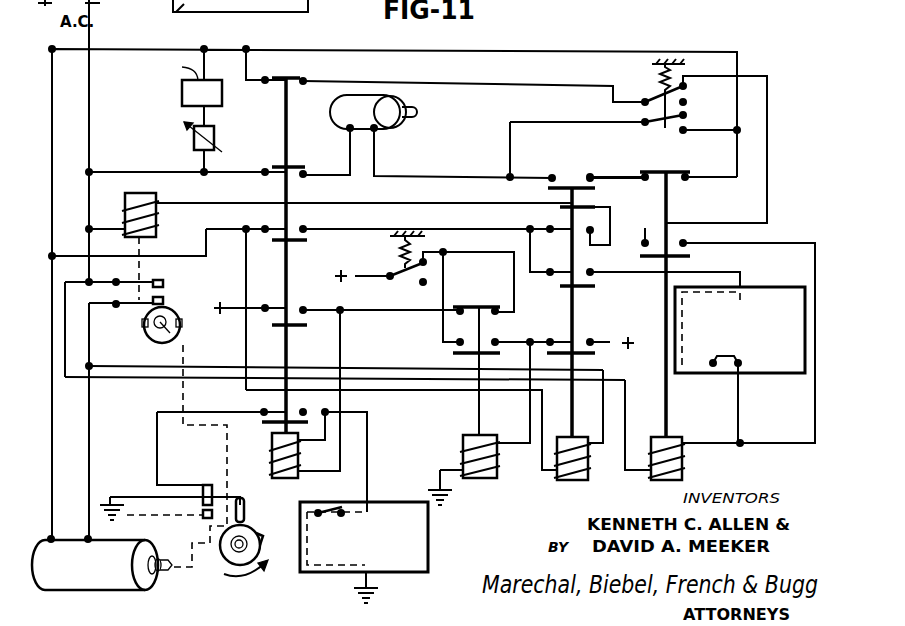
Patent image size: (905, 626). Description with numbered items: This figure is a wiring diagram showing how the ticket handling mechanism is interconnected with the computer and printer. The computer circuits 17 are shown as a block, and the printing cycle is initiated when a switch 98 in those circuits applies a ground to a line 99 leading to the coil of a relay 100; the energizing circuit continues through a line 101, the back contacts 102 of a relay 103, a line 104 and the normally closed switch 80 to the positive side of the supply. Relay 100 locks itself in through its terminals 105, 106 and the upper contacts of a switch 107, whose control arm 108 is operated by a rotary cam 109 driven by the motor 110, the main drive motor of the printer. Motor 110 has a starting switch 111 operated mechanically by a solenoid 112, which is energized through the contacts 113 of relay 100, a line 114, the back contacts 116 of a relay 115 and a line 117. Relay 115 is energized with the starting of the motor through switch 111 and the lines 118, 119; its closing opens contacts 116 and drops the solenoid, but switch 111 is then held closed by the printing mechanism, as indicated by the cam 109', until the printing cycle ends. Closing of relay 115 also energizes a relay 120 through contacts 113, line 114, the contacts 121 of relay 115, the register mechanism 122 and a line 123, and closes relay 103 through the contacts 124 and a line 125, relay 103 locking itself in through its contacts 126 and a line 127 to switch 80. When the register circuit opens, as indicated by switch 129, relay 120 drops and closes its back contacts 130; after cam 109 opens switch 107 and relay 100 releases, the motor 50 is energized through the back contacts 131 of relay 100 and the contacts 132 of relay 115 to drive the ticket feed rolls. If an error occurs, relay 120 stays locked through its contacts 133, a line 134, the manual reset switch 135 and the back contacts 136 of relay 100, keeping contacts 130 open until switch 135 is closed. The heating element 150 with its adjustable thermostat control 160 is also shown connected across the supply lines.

The computer circuits 17 is at (313, 562).
The motor 50 is at (364, 121).
The normally closed switch 80 is at (395, 270).
The switch 98 is at (333, 507).
The line 99 is at (368, 456).
The relay 100 is at (275, 470).
The line 101 is at (363, 313).
The back contacts 102 is at (472, 312).
The relay 103 is at (470, 435).
The line 104 is at (472, 238).
The terminals 105 is at (300, 308).
The terminals 106 is at (267, 410).
The switch 107 is at (208, 476).
The control arm 108 is at (247, 508).
The rotary cam 109 is at (234, 570).
The cam 109' is at (186, 326).
The motor 110 is at (100, 579).
The starting switch 111 is at (167, 298).
The solenoid 112 is at (157, 226).
The contacts 113 is at (299, 229).
The line 114 is at (408, 228).
The relay 115 is at (566, 480).
The back contacts 116 is at (563, 232).
The line 117 is at (443, 203).
The line 118 is at (242, 279).
The line 119 is at (152, 366).
The relay 120 is at (652, 479).
The contacts 121 is at (548, 286).
The register mechanism 122 is at (710, 375).
The line 123 is at (125, 379).
The contacts 124 is at (563, 343).
The line 125 is at (516, 446).
The contacts 126 is at (460, 348).
The line 127 is at (443, 330).
The switch 129 is at (745, 366).
The back contacts 130 is at (660, 180).
The back contacts 131 is at (304, 173).
The contacts 132 is at (567, 176).
The contacts 133 is at (673, 236).
The line 134 is at (813, 283).
The manual reset switch 135 is at (658, 125).
The back contacts 136 is at (303, 81).
The heating element 150 is at (182, 98).
The adjustable thermostat control 160 is at (193, 140).